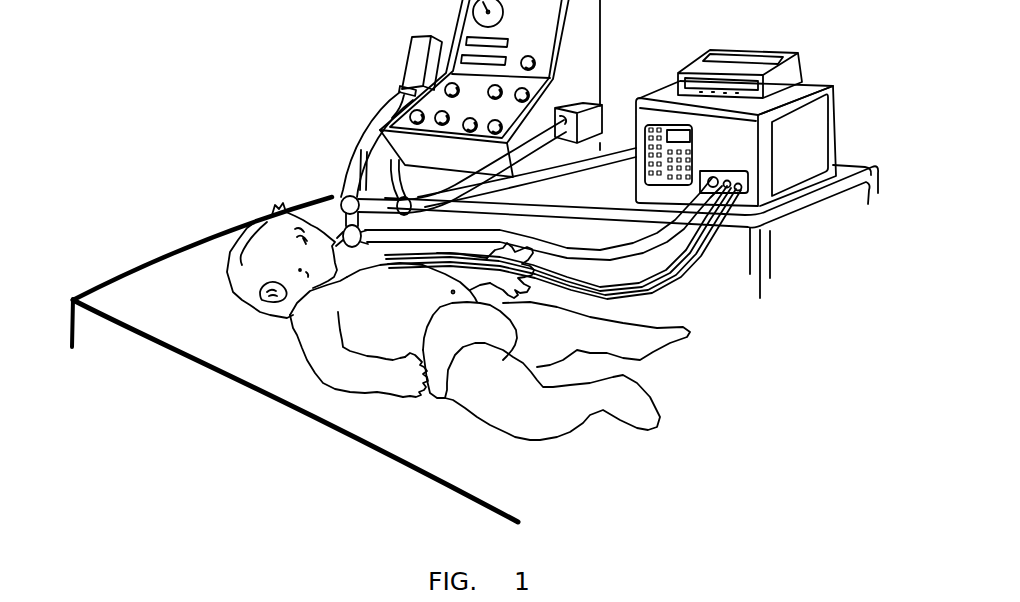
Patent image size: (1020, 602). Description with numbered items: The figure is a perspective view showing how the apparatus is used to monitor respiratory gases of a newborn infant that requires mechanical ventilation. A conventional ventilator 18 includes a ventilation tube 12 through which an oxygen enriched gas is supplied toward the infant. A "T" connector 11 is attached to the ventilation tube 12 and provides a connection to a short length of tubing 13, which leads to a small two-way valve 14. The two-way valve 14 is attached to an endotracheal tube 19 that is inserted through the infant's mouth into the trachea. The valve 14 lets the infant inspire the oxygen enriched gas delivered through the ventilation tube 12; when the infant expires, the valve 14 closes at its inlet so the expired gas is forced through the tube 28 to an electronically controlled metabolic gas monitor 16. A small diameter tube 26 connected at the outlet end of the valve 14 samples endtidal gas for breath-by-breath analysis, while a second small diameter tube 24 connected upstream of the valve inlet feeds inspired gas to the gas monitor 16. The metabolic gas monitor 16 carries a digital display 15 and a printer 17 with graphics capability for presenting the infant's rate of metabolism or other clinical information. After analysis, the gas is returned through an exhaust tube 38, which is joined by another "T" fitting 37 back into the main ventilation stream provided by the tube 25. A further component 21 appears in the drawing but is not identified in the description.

The "T" connector 11 is at (368, 173).
The ventilation tube 12 is at (353, 140).
The short length of tubing 13 is at (337, 210).
The two-way valve 14 is at (362, 228).
The digital display 15 is at (690, 138).
The metabolic gas monitor 16 is at (810, 138).
The printer 17 is at (795, 68).
The ventilator 18 is at (585, 27).
The endotracheal tube 19 is at (345, 263).
The tube 21 is at (396, 182).
The second small diameter tube 24 is at (700, 240).
The tube 25 is at (520, 155).
The small diameter tube 26 is at (682, 265).
The tube 28 is at (632, 242).
The "T" fitting 37 is at (405, 195).
The exhaust tube 38 is at (480, 197).